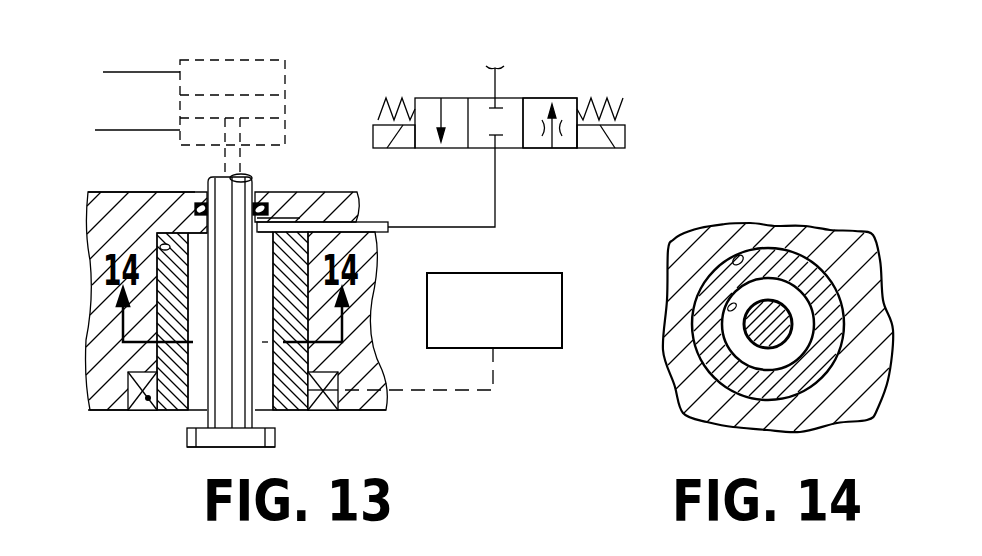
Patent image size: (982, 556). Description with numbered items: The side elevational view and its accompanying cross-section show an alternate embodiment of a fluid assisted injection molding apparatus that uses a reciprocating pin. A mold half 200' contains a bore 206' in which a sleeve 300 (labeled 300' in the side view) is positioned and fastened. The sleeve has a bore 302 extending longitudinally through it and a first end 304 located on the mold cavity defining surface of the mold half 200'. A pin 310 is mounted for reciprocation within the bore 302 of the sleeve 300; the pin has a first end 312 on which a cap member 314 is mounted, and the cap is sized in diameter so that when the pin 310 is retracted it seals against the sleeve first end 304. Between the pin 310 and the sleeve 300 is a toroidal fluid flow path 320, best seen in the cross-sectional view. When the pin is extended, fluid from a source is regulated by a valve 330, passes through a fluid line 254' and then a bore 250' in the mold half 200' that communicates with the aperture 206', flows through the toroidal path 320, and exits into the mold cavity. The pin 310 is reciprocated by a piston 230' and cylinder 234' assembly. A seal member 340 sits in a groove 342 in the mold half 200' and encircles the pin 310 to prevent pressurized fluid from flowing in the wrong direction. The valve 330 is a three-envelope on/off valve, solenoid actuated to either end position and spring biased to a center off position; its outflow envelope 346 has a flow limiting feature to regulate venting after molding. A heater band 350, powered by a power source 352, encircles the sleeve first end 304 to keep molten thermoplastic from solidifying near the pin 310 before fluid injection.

In FIG. 13, the mold half 200' is at (204, 305).
In FIG. 14, the mold half 200' is at (745, 340).
In FIG. 13, the bore 206' is at (99, 231).
In FIG. 14, the bore 206' is at (701, 219).
In FIG. 13, the piston 230' is at (173, 131).
In FIG. 13, the cylinder 234' is at (173, 82).
In FIG. 13, the bore 250' is at (348, 189).
In FIG. 13, the fluid line 254' is at (494, 187).
In FIG. 13, the bushing 300' is at (165, 346).
In FIG. 14, the sleeve 300 is at (792, 356).
In FIG. 13, the bore 302 is at (160, 193).
In FIG. 14, the bore 302 is at (730, 305).
In FIG. 13, the first end 304 is at (292, 412).
In FIG. 13, the pin 310 is at (255, 174).
In FIG. 14, the pin 310 is at (778, 310).
In FIG. 13, the first end 312 is at (220, 403).
In FIG. 13, the cap member 314 is at (210, 440).
In FIG. 13, the toroidal fluid flow path 320 is at (195, 355).
In FIG. 14, the toroidal fluid flow path 320 is at (763, 292).
In FIG. 13, the valve 330 is at (526, 94).
In FIG. 13, the seal member 340 is at (198, 203).
In FIG. 13, the groove 342 is at (270, 203).
In FIG. 13, the outflow envelope 346 is at (568, 108).
In FIG. 13, the heater band 350 is at (327, 412).
In FIG. 13, the power source 352 is at (522, 350).